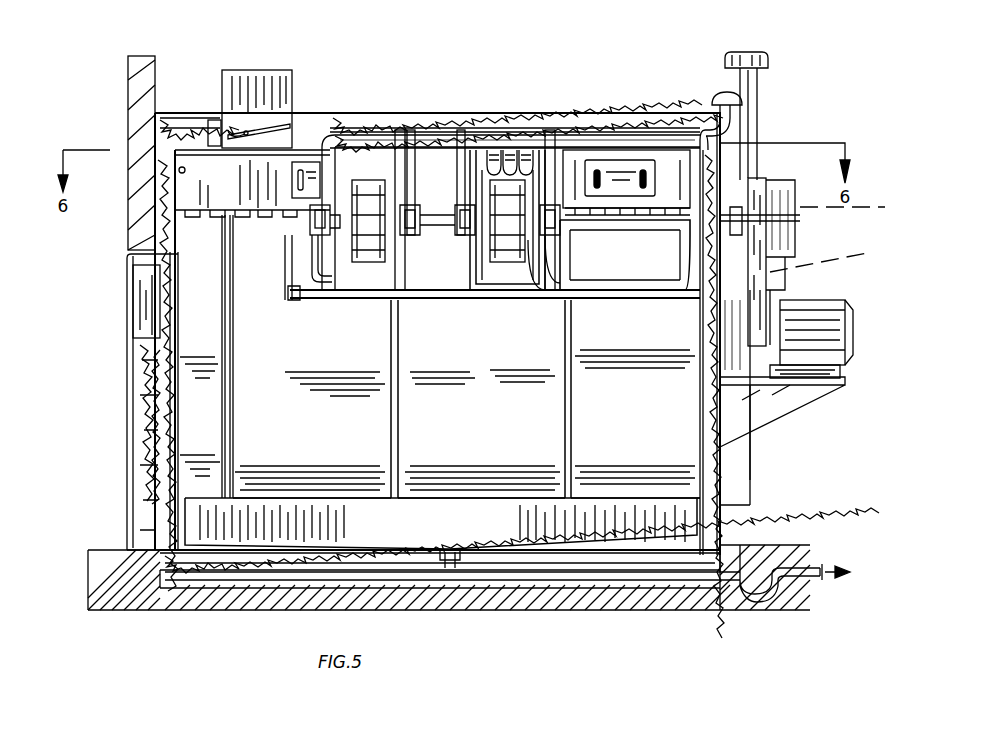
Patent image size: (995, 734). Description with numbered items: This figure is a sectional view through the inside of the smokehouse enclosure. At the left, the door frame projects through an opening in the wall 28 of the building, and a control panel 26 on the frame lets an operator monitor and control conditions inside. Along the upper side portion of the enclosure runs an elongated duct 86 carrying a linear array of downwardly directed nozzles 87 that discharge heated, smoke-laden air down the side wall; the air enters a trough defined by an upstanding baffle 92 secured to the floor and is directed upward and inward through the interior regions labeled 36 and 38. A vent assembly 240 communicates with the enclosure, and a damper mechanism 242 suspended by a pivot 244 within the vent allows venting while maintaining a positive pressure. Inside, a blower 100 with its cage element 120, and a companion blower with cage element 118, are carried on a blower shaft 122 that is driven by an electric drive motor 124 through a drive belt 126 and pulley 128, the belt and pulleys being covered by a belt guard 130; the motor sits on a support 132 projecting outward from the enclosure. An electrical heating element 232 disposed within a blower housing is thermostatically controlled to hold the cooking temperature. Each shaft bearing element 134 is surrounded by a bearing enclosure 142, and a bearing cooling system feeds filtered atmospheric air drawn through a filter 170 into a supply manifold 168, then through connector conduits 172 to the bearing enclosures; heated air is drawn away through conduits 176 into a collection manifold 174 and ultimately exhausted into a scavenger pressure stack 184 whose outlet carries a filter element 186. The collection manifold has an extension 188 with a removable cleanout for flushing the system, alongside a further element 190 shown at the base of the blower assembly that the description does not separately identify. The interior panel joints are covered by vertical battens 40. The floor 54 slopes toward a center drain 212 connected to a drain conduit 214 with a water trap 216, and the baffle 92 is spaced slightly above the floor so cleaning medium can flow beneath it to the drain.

The wall 28 is at (128, 98).
The control panel 26 is at (136, 306).
The elongated duct 86 is at (230, 185).
The downwardly directed nozzles 87 is at (218, 220).
The vent assembly 240 is at (292, 72).
The damper mechanism 242 is at (270, 118).
The pivot 244 is at (245, 128).
The connector conduits 172 is at (457, 178).
The electrical heating element 232 is at (519, 361).
The bearing cooling fluid supply manifold 168 is at (625, 130).
The filter 170 is at (720, 92).
The filter element 186 is at (750, 52).
The scavenger pressure stack 184 is at (757, 115).
The pulley 128 is at (859, 212).
The drive belt 126 is at (838, 256).
The belt guard 130 is at (773, 290).
The electric drive motor 124 is at (828, 303).
The support 132 is at (776, 408).
The bearing enclosure 142 is at (308, 228).
The bearing element 134 is at (312, 252).
The extension 188 is at (295, 290).
The rack plate 190 is at (287, 300).
The cage element 118 is at (373, 260).
The conduits 176 is at (447, 257).
The blower 100 is at (478, 270).
The cage element 120 is at (503, 257).
The cooling fluid collection manifold 174 is at (538, 303).
The blower shaft 122 is at (660, 225).
The vertical battens 40 is at (402, 380).
The compartment 36 is at (288, 423).
The compartment 38 is at (490, 423).
The upstanding baffle 92 is at (590, 505).
The floor 54 is at (630, 548).
The center drain 212 is at (450, 548).
The drain conduit 214 is at (555, 580).
The water trap 216 is at (762, 594).